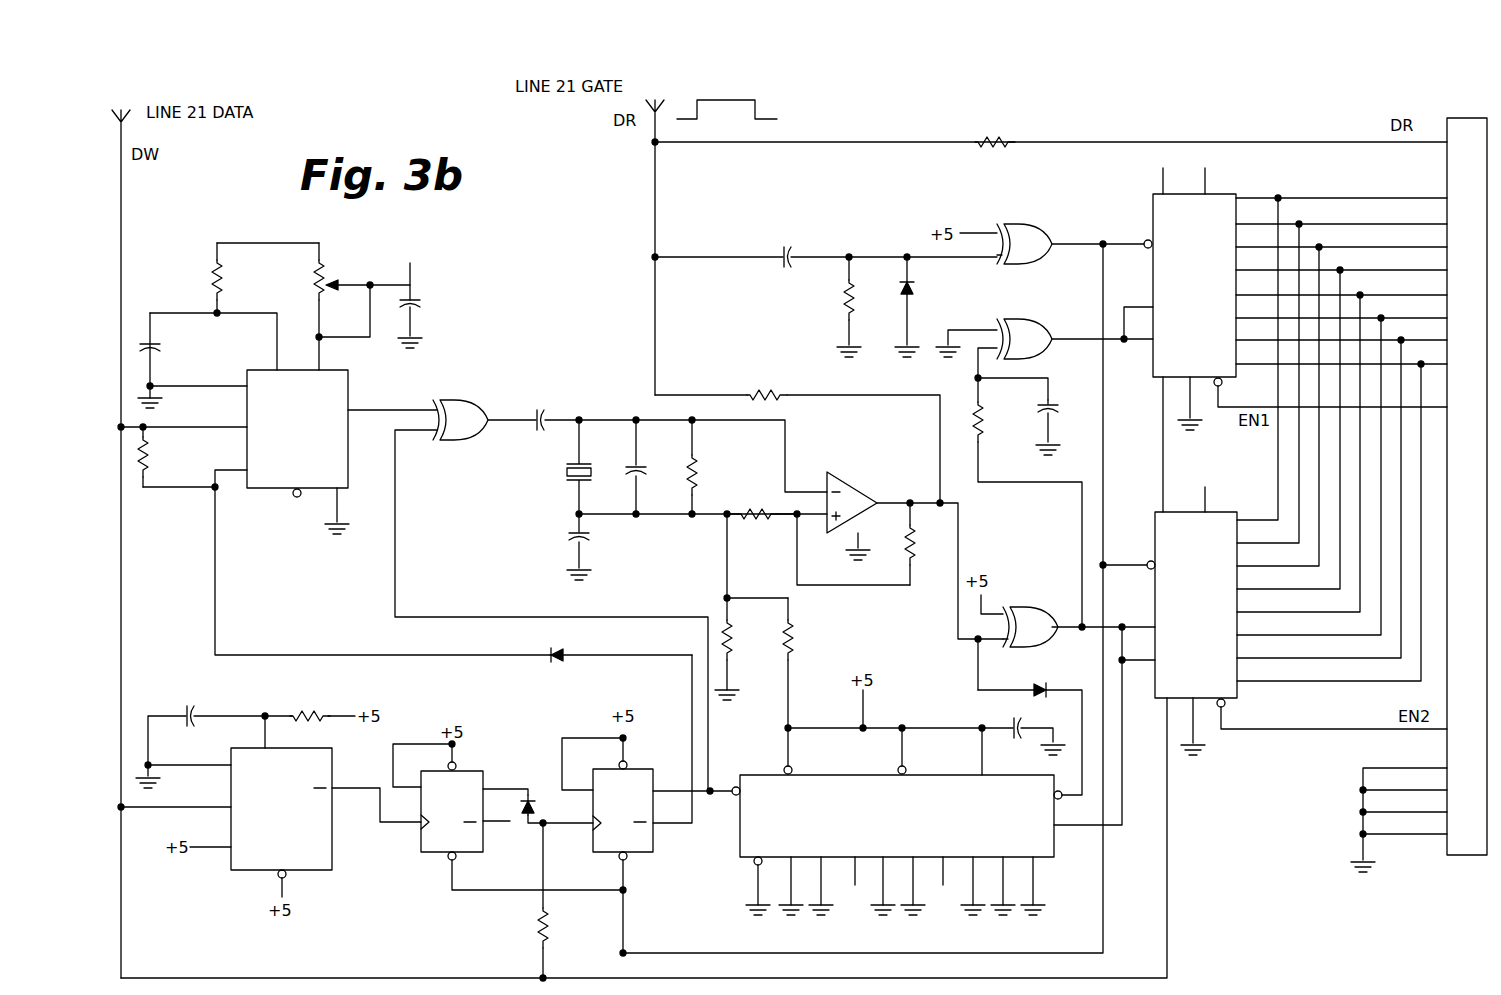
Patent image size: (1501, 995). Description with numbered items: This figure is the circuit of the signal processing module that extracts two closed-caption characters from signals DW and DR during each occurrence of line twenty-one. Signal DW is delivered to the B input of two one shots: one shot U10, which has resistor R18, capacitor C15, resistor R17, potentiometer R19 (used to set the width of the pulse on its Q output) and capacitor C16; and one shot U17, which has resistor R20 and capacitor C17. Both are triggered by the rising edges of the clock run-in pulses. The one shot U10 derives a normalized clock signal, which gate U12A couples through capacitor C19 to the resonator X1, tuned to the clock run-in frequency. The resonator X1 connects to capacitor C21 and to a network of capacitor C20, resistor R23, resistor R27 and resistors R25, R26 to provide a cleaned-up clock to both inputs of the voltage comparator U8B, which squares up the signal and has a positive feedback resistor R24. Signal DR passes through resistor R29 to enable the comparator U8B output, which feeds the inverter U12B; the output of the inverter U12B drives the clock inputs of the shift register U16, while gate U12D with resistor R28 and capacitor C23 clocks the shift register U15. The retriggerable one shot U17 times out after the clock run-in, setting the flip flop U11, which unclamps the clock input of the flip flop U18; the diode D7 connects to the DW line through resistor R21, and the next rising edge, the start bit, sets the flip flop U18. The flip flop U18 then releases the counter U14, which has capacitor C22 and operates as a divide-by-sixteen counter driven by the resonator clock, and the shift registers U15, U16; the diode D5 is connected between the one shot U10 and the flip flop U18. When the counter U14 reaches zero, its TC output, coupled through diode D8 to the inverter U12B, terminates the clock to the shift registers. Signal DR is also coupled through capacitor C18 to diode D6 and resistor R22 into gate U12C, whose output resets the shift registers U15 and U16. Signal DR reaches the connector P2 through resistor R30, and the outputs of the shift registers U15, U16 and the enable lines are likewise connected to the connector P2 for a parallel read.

The resistor R17 is at (234, 278).
The resistor R18 is at (160, 457).
The potentiometer R19 is at (297, 290).
The resistor R20 is at (310, 703).
The resistor R21 is at (561, 928).
The resistor R22 is at (863, 307).
The resistor R23 is at (711, 467).
The positive feedback resistor R24 is at (928, 544).
The resistor R25 is at (745, 640).
The resistor R26 is at (806, 629).
The resistor R27 is at (777, 502).
The resistor R28 is at (997, 422).
The resistor R29 is at (797, 435).
The resistor R30 is at (995, 130).
The capacitor C15 is at (167, 347).
The capacitor C16 is at (427, 292).
The capacitor C17 is at (188, 705).
The capacitor C18 is at (786, 246).
The capacitor C19 is at (536, 408).
The capacitor C20 is at (650, 467).
The capacitor C21 is at (599, 547).
The capacitor C22 is at (1016, 717).
The capacitor C23 is at (1064, 427).
The diode D5 is at (617, 644).
The diode D6 is at (920, 307).
The diode D7 is at (540, 805).
The diode D8 is at (1041, 678).
The resonator X1 is at (590, 467).
The voltage comparator U8B is at (847, 505).
The one shot U10 is at (300, 449).
The flip flop U11 is at (459, 809).
The gate U12A is at (460, 407).
The inverter U12B is at (1024, 609).
The gate U12C is at (1025, 234).
The gate U12D is at (1024, 329).
The counter U14 is at (898, 833).
The shift register U15 is at (1190, 273).
The shift register U16 is at (1194, 593).
The one shot U17 is at (286, 815).
The flip flop U18 is at (622, 797).
The connector P2 is at (1467, 473).